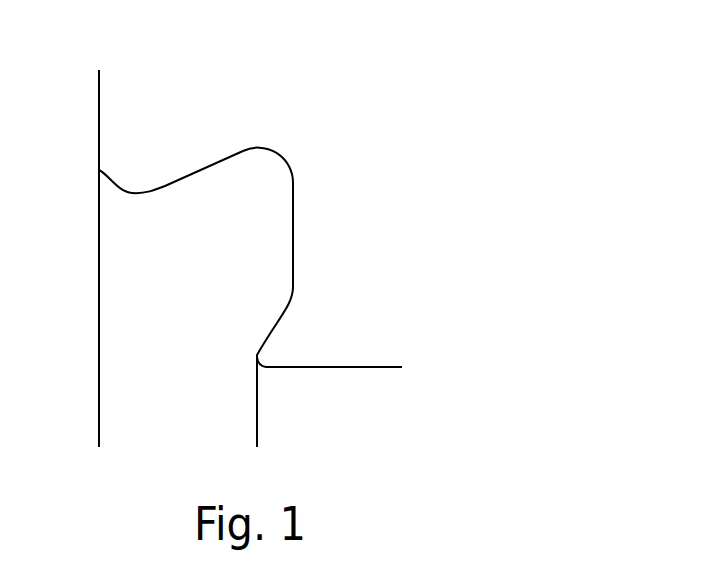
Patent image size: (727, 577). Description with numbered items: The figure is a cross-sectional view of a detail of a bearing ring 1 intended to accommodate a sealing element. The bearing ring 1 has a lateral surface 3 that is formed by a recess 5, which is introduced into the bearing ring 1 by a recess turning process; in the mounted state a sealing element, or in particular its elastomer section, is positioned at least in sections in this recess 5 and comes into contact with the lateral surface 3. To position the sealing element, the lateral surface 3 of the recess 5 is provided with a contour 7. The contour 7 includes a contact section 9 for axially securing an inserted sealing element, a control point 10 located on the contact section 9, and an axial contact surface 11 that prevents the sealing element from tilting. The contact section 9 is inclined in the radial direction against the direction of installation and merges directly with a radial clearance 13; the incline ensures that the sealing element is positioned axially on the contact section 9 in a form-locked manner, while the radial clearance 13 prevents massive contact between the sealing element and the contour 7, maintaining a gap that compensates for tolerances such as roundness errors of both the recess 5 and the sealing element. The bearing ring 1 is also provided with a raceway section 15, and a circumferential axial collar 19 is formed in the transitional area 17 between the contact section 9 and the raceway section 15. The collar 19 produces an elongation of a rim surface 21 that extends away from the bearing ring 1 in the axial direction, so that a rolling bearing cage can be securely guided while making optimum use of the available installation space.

The bearing ring 1 is at (419, 89).
The lateral surface 3 is at (256, 271).
The recess 5 is at (261, 191).
The contour 7 is at (180, 163).
The contact section 9 is at (181, 181).
The control point 10 is at (162, 185).
The axial contact surface 11 is at (294, 220).
The radial clearance 13 is at (241, 166).
The raceway section 15 is at (346, 354).
The transitional area 17 is at (237, 329).
The axial collar 19 is at (255, 354).
The rim surface 21 is at (320, 368).